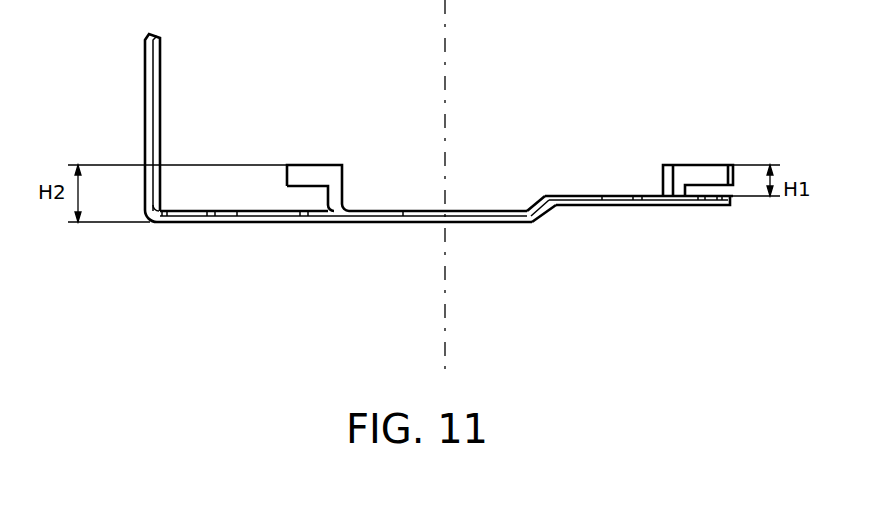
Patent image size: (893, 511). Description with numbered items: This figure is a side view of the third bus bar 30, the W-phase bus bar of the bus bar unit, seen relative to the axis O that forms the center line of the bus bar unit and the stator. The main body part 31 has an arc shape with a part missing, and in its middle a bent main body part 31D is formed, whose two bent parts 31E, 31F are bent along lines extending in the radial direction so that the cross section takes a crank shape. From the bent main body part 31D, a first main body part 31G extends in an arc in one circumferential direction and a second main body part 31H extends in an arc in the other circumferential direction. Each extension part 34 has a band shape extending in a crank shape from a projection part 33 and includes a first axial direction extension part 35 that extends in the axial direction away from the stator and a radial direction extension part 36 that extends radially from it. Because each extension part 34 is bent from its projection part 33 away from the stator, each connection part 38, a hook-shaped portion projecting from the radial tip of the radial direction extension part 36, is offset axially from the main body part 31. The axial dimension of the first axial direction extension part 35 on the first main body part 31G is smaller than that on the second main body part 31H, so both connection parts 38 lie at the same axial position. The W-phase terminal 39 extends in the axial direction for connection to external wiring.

The axis O is at (447, 88).
The third bus bar 30 is at (134, 129).
The main body part 31 is at (445, 278).
The bent main body part 31D is at (570, 260).
The bent part 31E is at (530, 222).
The bent part 31F is at (517, 284).
The first main body part 31G is at (639, 260).
The second main body part 31H is at (472, 222).
The projection part 33 is at (315, 222).
The extension part 34 is at (513, 133).
The first axial direction extension part 35 is at (345, 203).
The radial direction extension part 36 is at (326, 176).
The connection part 38 is at (305, 172).
The W-phase terminal 39 is at (162, 98).